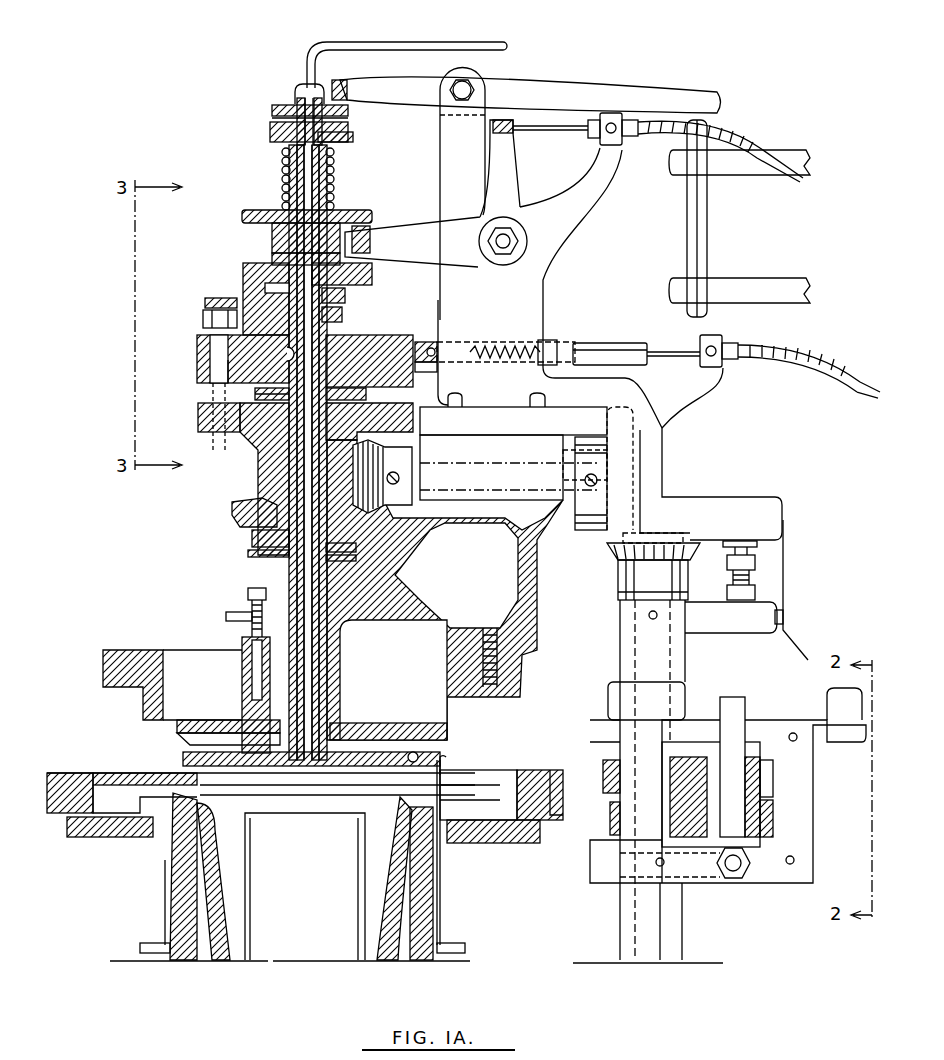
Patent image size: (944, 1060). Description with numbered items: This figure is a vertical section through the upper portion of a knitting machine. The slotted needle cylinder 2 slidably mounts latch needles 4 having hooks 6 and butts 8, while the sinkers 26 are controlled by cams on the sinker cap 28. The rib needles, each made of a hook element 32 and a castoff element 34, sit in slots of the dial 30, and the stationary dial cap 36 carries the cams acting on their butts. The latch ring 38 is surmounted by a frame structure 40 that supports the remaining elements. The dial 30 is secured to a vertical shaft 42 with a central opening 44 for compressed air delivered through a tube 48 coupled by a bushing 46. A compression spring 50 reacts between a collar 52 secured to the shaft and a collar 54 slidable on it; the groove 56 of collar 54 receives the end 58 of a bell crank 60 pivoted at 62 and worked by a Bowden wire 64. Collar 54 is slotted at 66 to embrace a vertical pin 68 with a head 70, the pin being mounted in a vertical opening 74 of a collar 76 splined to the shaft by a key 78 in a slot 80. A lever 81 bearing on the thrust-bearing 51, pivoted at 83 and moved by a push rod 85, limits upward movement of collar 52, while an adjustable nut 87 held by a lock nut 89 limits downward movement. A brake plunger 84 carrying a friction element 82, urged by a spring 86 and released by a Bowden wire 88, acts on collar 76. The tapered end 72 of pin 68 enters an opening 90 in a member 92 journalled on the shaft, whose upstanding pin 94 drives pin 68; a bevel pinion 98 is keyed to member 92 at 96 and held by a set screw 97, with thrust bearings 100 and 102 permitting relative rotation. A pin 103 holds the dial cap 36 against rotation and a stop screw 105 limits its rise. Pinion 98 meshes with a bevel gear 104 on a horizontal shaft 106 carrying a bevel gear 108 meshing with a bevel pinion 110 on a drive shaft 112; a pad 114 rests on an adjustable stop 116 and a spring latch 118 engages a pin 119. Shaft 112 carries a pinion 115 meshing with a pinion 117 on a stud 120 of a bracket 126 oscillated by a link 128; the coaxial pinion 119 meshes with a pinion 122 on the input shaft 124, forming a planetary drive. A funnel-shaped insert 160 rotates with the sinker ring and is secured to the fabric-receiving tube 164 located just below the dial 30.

The slotted needle cylinder 2 is at (425, 908).
The latch needles 4 is at (441, 862).
The hooks 6 is at (446, 758).
The butts 8 is at (466, 945).
The sinkers 26 is at (462, 777).
The sinker cap 28 is at (530, 777).
The dial 30 is at (222, 745).
The hook elements 32 is at (420, 755).
The castoff elements 34 is at (425, 748).
The dial cap 36 is at (415, 725).
The latch ring 38 is at (160, 684).
The frame structure 40 is at (530, 608).
The vertical shaft 42 is at (292, 582).
The central opening 44 is at (308, 640).
The bushing 46 is at (296, 90).
The tube 48 is at (431, 44).
The compression spring 50 is at (336, 165).
The thrust-bearing 51 is at (272, 110).
The collar 52 is at (270, 134).
The collar 54 is at (348, 210).
The circumferential groove 56 is at (272, 230).
The end of bell crank 58 is at (272, 258).
The bell crank 60 is at (448, 230).
The pivot 62 is at (512, 243).
The Bowden wire 64 is at (545, 128).
The slot 66 is at (203, 319).
The vertical pin 68 is at (205, 303).
The head 70 is at (222, 298).
The tapered lower end 72 is at (212, 396).
The vertical opening 74 is at (210, 359).
The collar 76 is at (197, 345).
The key 78 is at (285, 352).
The slot 80 is at (230, 385).
The lever 81 is at (383, 86).
The friction element 82 is at (419, 342).
The pivot 83 is at (470, 86).
The plunger 84 is at (428, 372).
The push rod 85 is at (706, 244).
The compression spring 86 is at (507, 342).
The adjustable nut 87 is at (343, 314).
The Bowden wire 88 is at (670, 350).
The lock nut 89 is at (346, 295).
The opening 90 is at (198, 420).
The member 92 is at (262, 432).
The upstanding pin 94 is at (218, 440).
The key 96 is at (252, 536).
The set screw 97 is at (250, 554).
The bevel pinion 98 is at (242, 508).
The thrust bearing 100 is at (357, 395).
The thrust bearing 102 is at (372, 520).
The pin 103 is at (252, 670).
The bevel gear 104 is at (400, 473).
The adjustable stop screw 105 is at (248, 595).
The horizontal shaft 106 is at (490, 463).
The bevel gear 108 is at (612, 548).
The bevel pinion 110 is at (692, 545).
The drive shaft 112 is at (633, 642).
The pad 114 is at (742, 541).
The pinion 115 is at (603, 768).
The adjustable stop 116 is at (755, 557).
The pinion 117 is at (780, 780).
The spring latch 118 is at (784, 580).
The pin / coaxial pinion 119 is at (784, 617).
The stud 120 is at (728, 700).
The pinion 122 is at (610, 818).
The shaft 124 is at (633, 912).
The bracket 126 is at (780, 720).
The link 128 is at (830, 698).
The funnel-shaped insert 160 is at (385, 840).
The fabric-receiving tube 164 is at (358, 853).